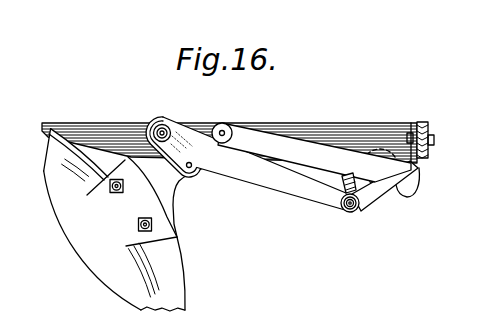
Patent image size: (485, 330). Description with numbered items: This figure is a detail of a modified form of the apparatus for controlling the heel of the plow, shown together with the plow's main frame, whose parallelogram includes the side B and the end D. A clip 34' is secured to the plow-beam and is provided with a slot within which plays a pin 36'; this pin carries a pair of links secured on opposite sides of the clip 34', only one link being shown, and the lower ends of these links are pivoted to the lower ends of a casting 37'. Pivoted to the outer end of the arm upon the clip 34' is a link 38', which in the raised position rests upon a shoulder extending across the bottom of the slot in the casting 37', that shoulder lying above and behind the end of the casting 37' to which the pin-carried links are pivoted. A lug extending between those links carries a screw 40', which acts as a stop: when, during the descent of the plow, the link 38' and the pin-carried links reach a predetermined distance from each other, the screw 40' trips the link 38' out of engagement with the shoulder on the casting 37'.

The side of the main frame B is at (379, 124).
The end of the main frame D is at (432, 126).
The clip 34' is at (130, 220).
The pin 36' is at (249, 151).
The casting 37' is at (385, 182).
The link 38' is at (311, 139).
The screw 40' is at (336, 203).